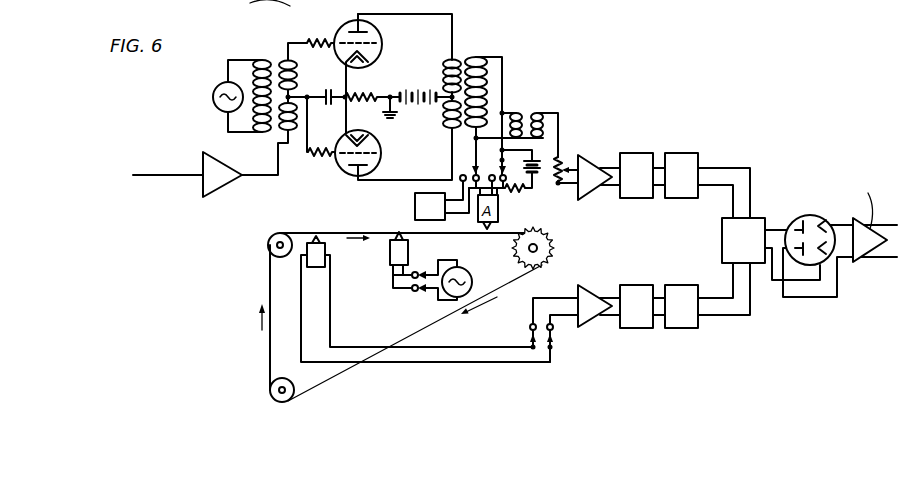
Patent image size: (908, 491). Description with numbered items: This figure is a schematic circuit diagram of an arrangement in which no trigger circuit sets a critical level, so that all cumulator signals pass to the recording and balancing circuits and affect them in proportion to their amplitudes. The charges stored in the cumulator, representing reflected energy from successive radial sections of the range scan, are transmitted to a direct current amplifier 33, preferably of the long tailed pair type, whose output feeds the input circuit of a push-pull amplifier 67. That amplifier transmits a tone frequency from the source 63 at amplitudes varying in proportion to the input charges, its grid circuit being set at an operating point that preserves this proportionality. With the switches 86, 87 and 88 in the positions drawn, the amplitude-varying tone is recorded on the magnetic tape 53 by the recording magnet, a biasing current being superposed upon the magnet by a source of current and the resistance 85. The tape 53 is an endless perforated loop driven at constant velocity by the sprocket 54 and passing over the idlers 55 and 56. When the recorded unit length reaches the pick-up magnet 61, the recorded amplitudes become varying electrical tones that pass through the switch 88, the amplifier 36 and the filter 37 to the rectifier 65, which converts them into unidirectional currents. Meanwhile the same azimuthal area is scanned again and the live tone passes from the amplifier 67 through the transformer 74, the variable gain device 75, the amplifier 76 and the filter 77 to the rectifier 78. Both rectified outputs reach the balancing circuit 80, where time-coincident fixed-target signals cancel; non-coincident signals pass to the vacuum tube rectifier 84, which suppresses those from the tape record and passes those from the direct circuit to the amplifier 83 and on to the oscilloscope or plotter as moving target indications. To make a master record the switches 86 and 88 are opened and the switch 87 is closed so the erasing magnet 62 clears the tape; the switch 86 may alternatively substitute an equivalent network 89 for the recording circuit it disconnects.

The direct current amplifier 33 is at (217, 163).
The source 63 is at (214, 92).
The push-pull amplifier 67 is at (425, 40).
The transformer 74 is at (528, 110).
The variable gain device 75 is at (560, 160).
The amplifier 76 is at (592, 163).
The filter 77 is at (633, 153).
The rectifier 78 is at (678, 153).
The resistance 85 is at (525, 175).
The switch 86 is at (488, 163).
The equivalent network 89 is at (415, 205).
The switch 88 is at (556, 344).
The amplifier 36 is at (594, 294).
The filter 37 is at (646, 285).
The rectifier 65 is at (692, 285).
The balancing circuit 80 is at (775, 211).
The vacuum tube rectifier 84 is at (812, 216).
The amplifier 83 is at (863, 262).
The idler 56 is at (268, 242).
The idler 55 is at (270, 391).
The magnetic tape 53 is at (419, 333).
The sprocket 54 is at (552, 240).
The pick-up magnet 61 is at (301, 258).
The erasing magnet 62 is at (390, 255).
The switch 87 is at (438, 270).